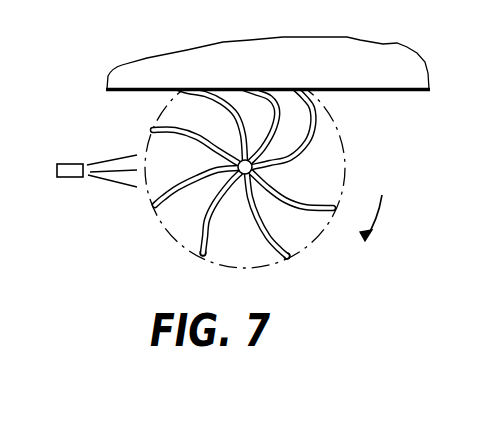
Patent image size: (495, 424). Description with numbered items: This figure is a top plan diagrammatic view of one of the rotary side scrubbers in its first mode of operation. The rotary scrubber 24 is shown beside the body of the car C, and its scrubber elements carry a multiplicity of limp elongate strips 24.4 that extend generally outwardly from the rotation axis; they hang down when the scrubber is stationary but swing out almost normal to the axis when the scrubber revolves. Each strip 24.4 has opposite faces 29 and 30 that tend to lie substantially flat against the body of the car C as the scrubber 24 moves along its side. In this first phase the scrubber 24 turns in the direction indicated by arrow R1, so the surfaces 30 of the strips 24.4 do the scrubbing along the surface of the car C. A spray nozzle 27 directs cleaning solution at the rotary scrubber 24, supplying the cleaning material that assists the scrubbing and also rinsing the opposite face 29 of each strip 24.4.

The car C is at (403, 63).
The rotary scrubber 24 is at (328, 142).
The elongate strips 24.4 is at (160, 190).
The spray nozzle 27 is at (75, 178).
The opposite face 29 is at (281, 253).
The surface 30 is at (223, 88).
The arrow R1 is at (377, 218).